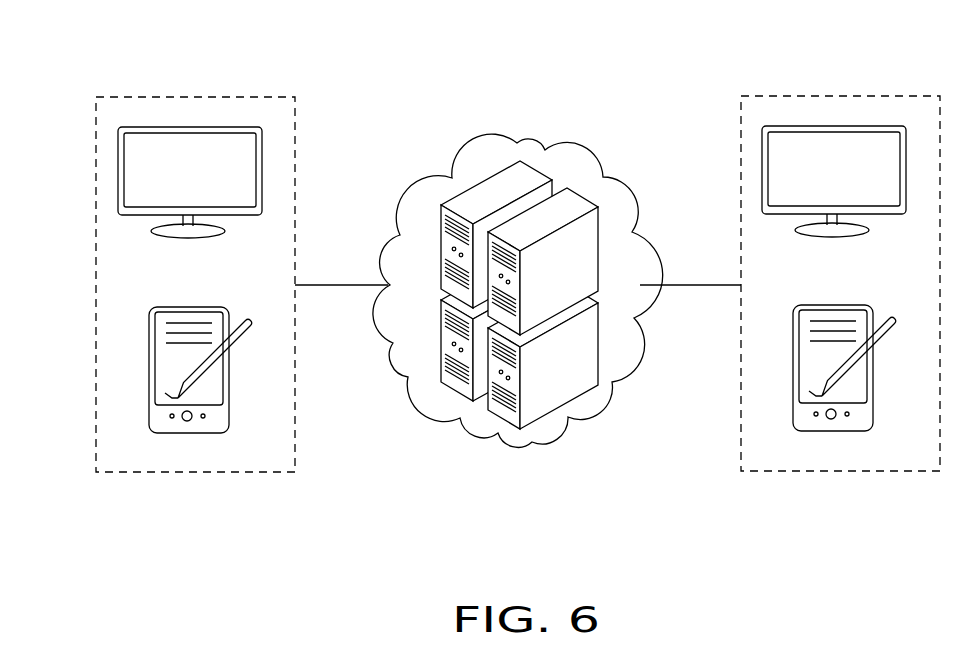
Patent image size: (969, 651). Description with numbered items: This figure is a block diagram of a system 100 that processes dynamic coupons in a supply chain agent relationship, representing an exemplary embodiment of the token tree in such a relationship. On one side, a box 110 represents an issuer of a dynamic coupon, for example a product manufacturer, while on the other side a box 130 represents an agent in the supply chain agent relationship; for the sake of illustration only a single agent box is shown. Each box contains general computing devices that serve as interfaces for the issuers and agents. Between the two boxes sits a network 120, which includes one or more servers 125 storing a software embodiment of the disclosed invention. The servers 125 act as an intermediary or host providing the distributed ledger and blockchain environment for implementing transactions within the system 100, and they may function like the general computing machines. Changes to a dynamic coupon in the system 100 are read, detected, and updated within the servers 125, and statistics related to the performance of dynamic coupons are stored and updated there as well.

The system 100 is at (418, 103).
The box 110 is at (195, 96).
The box 130 is at (812, 96).
The network 120 is at (545, 433).
The server(s) 125 is at (600, 240).